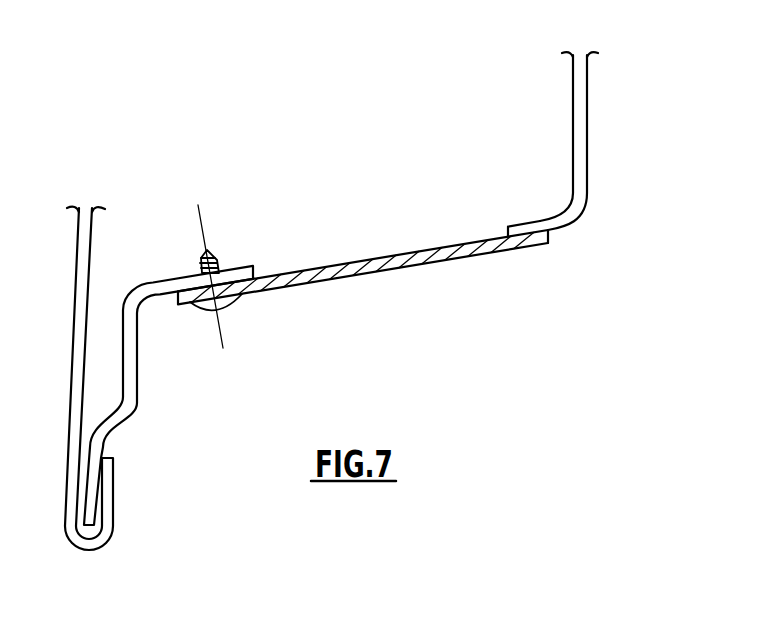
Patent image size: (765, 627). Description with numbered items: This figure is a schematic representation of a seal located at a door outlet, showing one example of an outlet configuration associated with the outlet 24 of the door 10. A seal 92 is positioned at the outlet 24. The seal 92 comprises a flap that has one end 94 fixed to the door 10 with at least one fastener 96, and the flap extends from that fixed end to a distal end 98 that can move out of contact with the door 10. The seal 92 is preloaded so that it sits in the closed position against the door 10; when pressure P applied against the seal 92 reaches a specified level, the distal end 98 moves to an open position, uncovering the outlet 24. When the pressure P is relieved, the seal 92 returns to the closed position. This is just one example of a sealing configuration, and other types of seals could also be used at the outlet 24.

The door 10 is at (547, 144).
The outlet 24 is at (507, 229).
The seal 92 is at (372, 273).
The end 94 is at (184, 303).
The fastener 96 is at (219, 257).
The distal end 98 is at (550, 235).
The pressure P is at (350, 265).